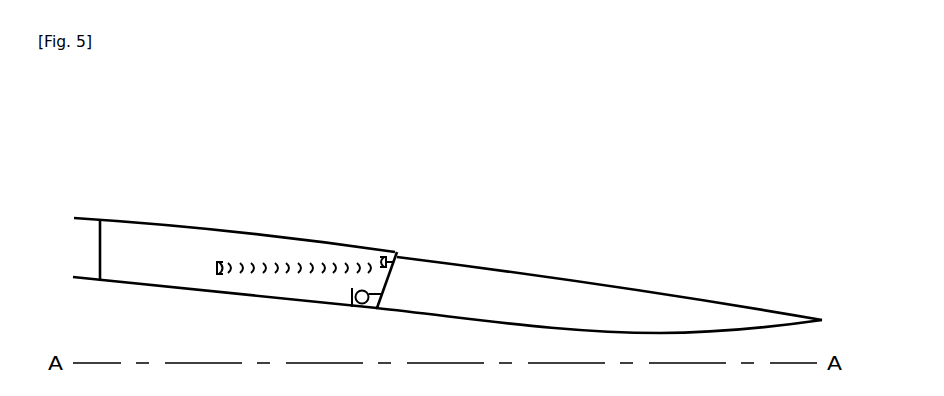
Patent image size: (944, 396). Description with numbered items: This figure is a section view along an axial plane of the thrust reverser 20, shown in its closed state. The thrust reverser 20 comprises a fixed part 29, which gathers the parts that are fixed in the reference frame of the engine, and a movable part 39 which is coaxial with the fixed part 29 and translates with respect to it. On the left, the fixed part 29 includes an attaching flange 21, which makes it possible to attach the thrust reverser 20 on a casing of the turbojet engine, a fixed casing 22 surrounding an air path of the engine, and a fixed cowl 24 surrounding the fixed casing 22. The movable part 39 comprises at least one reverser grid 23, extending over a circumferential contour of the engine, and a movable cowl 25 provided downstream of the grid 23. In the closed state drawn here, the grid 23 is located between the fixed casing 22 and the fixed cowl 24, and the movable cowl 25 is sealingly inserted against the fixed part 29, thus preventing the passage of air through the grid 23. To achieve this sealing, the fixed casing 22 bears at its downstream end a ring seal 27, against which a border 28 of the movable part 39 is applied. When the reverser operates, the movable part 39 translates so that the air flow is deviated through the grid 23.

The thrust reverser 20 is at (597, 141).
The attaching flange 21 is at (100, 252).
The fixed casing 22 is at (220, 296).
The reverser grid 23 is at (299, 275).
The fixed cowl 24 is at (273, 228).
The movable cowl 25 is at (538, 272).
The ring seal 27 is at (362, 305).
The border 28 is at (378, 308).
The fixed part 29 is at (201, 199).
The movable part 39 is at (649, 252).